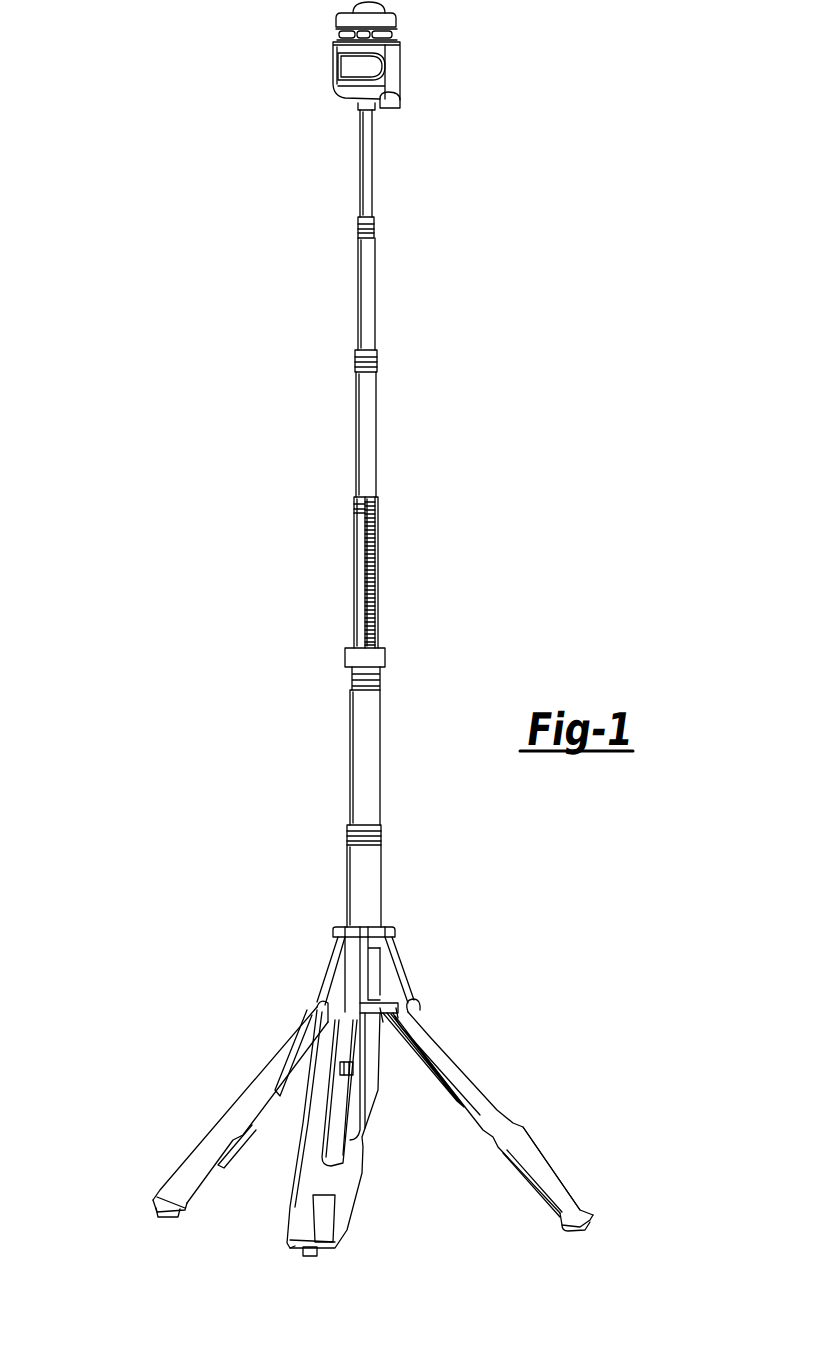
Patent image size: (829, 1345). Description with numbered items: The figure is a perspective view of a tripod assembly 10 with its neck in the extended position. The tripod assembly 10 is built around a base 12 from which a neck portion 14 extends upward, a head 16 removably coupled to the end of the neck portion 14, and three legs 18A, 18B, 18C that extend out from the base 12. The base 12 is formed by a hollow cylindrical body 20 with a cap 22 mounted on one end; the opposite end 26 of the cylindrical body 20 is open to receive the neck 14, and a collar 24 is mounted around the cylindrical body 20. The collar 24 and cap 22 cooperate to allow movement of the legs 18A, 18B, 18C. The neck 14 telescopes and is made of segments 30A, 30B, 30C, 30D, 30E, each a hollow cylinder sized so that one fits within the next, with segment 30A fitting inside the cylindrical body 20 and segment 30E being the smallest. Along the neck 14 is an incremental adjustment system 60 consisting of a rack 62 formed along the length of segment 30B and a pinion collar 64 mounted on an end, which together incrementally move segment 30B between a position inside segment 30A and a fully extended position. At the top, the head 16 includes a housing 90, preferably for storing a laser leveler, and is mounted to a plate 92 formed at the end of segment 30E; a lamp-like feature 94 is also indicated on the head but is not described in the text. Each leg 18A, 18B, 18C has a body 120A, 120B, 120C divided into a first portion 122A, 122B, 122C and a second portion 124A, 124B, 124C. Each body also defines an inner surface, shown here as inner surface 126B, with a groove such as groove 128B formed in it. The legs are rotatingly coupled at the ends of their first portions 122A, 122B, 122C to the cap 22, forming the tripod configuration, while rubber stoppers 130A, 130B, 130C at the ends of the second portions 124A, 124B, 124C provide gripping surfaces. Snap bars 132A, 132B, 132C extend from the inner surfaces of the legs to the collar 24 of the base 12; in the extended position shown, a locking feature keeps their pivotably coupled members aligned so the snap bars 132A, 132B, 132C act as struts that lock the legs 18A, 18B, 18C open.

The tripod assembly 10 is at (201, 1079).
The base 12 is at (341, 922).
The neck portion 14 is at (452, 498).
The head 16 is at (402, 62).
The leg 18A is at (193, 1152).
The leg 18B is at (364, 1175).
The leg 18C is at (499, 1110).
The hollow cylindrical body 20 is at (352, 868).
The cap 22 is at (394, 988).
The collar 24 is at (376, 932).
The end of cylindrical body 26 is at (368, 828).
The segment 30A is at (380, 728).
The segment 30B is at (354, 570).
The segment 30C is at (376, 420).
The segment 30D is at (375, 272).
The segment 30E is at (362, 157).
The incremental adjustment system 60 is at (386, 622).
The rack 62 is at (378, 543).
The pinion collar 64 is at (343, 657).
The housing 90 is at (395, 80).
The plate 92 is at (389, 104).
The lamp array 94 is at (331, 98).
The body 120A is at (158, 1188).
The body 120B is at (287, 1222).
The body 120C is at (570, 1176).
The first portion 122A is at (258, 1068).
The first portion 122B is at (371, 1112).
The first portion 122C is at (441, 1055).
The second portion 124A is at (237, 1140).
The second portion 124B is at (338, 1232).
The second portion 124C is at (589, 1200).
The inner surface 126B is at (300, 1188).
The groove 128B is at (334, 1162).
The rubber stopper 130A is at (157, 1210).
The rubber stopper 130B is at (296, 1250).
The rubber stopper 130C is at (600, 1218).
The snap bar 132A is at (314, 990).
The snap bar 132B is at (357, 1052).
The snap bar 132C is at (419, 985).